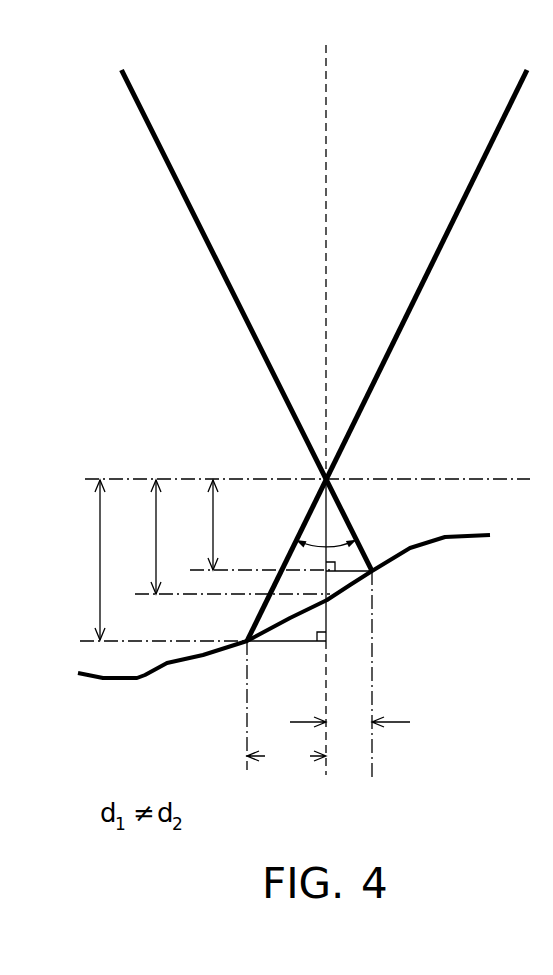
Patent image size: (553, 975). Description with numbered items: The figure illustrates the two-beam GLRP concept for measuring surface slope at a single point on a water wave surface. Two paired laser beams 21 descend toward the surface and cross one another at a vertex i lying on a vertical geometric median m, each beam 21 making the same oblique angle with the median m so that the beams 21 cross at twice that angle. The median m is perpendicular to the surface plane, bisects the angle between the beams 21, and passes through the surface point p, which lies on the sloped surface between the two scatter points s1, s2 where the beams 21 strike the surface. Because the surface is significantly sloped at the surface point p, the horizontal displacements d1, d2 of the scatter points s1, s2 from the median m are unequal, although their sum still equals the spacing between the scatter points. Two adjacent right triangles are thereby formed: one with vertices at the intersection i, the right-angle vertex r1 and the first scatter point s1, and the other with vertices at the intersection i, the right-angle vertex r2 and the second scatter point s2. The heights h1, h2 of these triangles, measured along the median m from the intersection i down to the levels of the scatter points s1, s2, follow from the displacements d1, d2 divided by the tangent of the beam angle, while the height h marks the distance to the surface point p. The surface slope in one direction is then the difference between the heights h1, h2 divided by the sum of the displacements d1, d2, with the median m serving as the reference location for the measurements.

The laser beams 21 is at (226, 252).
The median m is at (343, 410).
The intersection vertex i is at (326, 479).
The surface point p is at (327, 600).
The first scatter point s1 is at (247, 641).
The second scatter point s2 is at (370, 571).
The first right-angle vertex r1 is at (327, 641).
The second right-angle vertex r2 is at (328, 575).
The height h is at (232, 537).
The first height h1 is at (163, 560).
The second height h2 is at (260, 525).
The first horizontal displacement d1 is at (286, 710).
The second horizontal displacement d2 is at (405, 674).